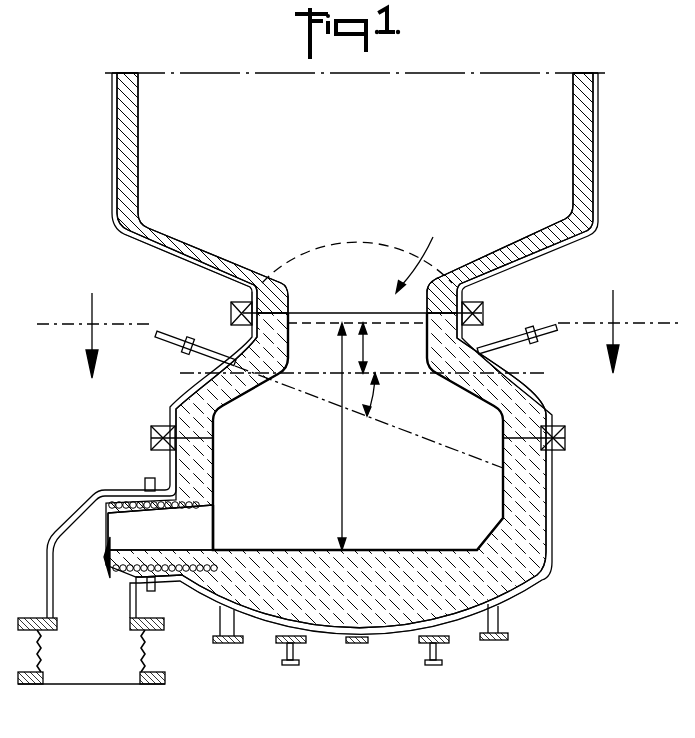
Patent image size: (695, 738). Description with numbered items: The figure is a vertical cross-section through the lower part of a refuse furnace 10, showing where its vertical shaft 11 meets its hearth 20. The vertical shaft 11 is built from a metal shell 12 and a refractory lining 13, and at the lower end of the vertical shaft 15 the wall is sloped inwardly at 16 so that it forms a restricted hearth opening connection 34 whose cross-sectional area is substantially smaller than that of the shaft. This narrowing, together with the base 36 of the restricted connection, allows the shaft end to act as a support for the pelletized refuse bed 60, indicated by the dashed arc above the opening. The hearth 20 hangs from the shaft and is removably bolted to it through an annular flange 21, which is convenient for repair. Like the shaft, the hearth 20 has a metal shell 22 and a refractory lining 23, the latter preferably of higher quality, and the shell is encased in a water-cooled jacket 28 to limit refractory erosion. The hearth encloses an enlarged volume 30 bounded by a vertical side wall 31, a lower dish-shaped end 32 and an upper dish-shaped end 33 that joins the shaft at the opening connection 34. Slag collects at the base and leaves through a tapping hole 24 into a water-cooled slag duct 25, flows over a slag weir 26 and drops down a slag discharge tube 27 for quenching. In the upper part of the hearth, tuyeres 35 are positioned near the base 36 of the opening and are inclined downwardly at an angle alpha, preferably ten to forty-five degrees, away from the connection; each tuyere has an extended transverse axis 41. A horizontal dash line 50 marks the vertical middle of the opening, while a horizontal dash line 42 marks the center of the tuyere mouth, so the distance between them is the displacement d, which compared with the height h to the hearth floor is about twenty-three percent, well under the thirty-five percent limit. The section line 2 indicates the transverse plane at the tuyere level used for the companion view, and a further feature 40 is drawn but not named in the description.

The section line of FIG. 2 is at (359, 334).
The furnace 10 is at (609, 88).
The vertical shaft 11 is at (355, 193).
The metal shell 12 is at (598, 152).
The refractory lining 13 is at (573, 137).
The lower end of the vertical shaft 15 is at (200, 262).
The inwardly sloped lower end 16 is at (246, 264).
The hearth 20 is at (318, 484).
The annular flange 21 is at (482, 313).
The metal shell 22 is at (552, 547).
The refractory lining 23 is at (503, 478).
The tapping hole 24 is at (220, 532).
The water-cooled slag duct 25 is at (182, 546).
The slag weir 26 is at (107, 572).
The slag discharge tube 27 is at (77, 673).
The water-cooled jacket 28 is at (518, 592).
The enlarged volume 30 is at (350, 478).
The vertical side wall 31 is at (553, 512).
The lower dish-shaped end 32 is at (357, 644).
The upper dish-shaped end 33 is at (538, 380).
The restricted hearth opening connection 34 is at (423, 250).
The tuyeres 35 is at (170, 348).
The base of the shaft-hearth restricted opening connection 36 is at (324, 436).
The inclined wall surface 40 is at (258, 380).
The extended transverse axis of the tuyere 41 is at (436, 441).
The horizontal dash line 42 is at (398, 373).
The horizontal dash line 50 is at (356, 323).
The pelletized refuse bed 60 is at (346, 243).